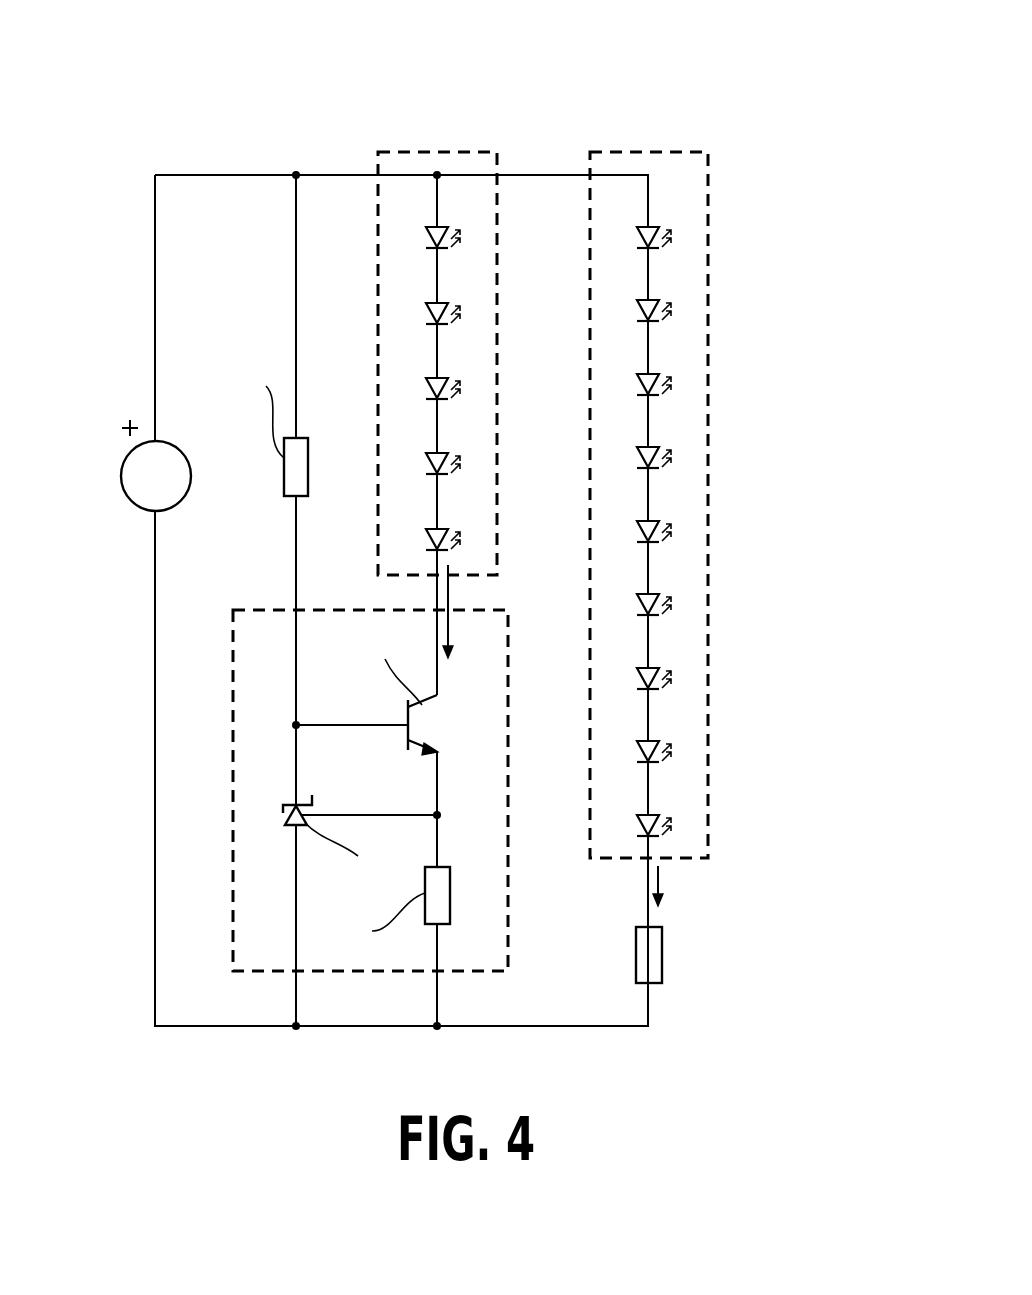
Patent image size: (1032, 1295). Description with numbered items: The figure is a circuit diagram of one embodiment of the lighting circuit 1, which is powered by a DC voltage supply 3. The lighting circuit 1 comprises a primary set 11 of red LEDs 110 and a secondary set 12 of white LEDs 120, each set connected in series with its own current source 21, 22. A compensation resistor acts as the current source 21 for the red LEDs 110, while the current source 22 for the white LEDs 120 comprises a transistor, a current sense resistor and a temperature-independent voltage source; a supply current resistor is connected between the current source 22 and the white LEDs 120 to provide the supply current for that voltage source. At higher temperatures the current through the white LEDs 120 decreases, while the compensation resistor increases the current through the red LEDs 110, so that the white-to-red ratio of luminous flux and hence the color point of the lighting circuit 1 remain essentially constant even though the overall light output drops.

The lighting circuit 1 is at (727, 104).
The DC voltage supply 3 is at (120, 476).
The primary set of red LEDs 11 is at (650, 152).
The secondary set of white LEDs 12 is at (437, 152).
The current source 21 is at (662, 957).
The current source 22 is at (483, 971).
The red LEDs 110 is at (640, 230).
The white LEDs 120 is at (429, 230).